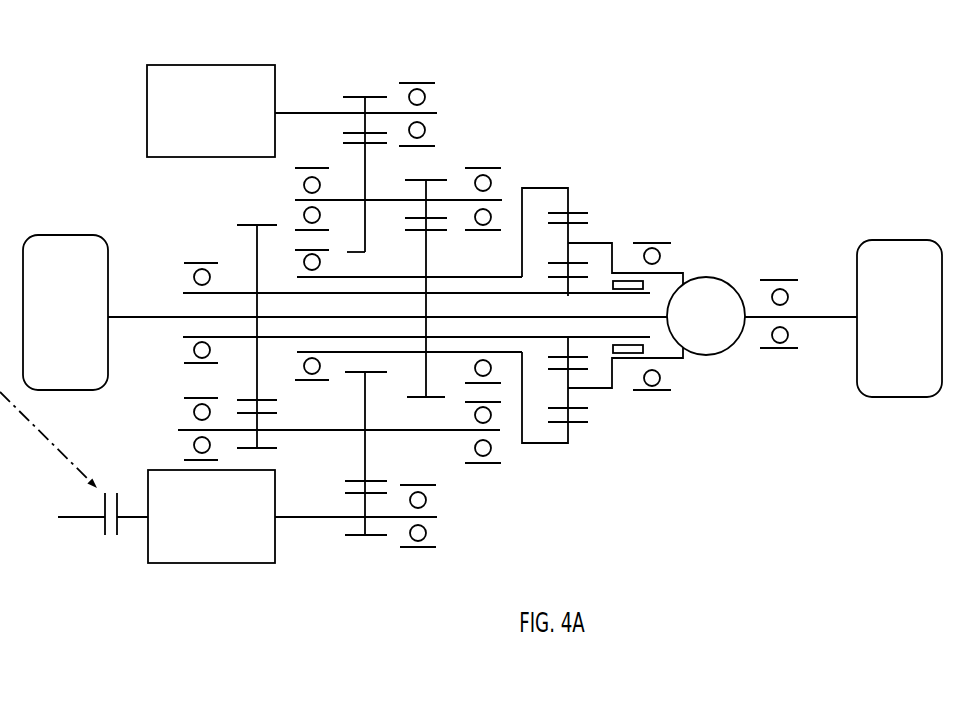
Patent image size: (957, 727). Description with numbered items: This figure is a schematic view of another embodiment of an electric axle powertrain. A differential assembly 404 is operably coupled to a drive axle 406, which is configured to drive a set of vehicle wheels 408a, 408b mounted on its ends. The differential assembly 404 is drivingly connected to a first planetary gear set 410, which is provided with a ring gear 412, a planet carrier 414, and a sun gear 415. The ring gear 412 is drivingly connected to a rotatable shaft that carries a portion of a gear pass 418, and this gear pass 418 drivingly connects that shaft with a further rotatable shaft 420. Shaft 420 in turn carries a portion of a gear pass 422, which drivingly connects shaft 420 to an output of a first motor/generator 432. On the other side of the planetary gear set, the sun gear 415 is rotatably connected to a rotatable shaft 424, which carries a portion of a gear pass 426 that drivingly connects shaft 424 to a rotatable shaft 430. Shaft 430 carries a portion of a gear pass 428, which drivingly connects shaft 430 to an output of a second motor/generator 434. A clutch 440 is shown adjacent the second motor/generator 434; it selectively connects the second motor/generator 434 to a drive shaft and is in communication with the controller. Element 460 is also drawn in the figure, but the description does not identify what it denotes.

The differential assembly 404 is at (690, 330).
The drive axle 406 is at (133, 313).
The vehicle wheel 408a is at (888, 240).
The vehicle wheel 408b is at (62, 235).
The first planetary gear set 410 is at (557, 155).
The ring gear 412 is at (577, 212).
The planet carrier 414 is at (572, 236).
The sun gear 415 is at (572, 358).
The gear pass 418 is at (440, 166).
The rotatable shaft 420 is at (377, 188).
The gear pass 422 is at (371, 92).
The rotatable shaft 424 is at (170, 343).
The gear pass 426 is at (286, 446).
The gear pass 428 is at (364, 555).
The rotatable shaft 430 is at (417, 445).
The first motor/generator 432 is at (190, 124).
The second motor/generator 434 is at (193, 529).
The clutch 440 is at (110, 553).
The gear 460 is at (394, 263).